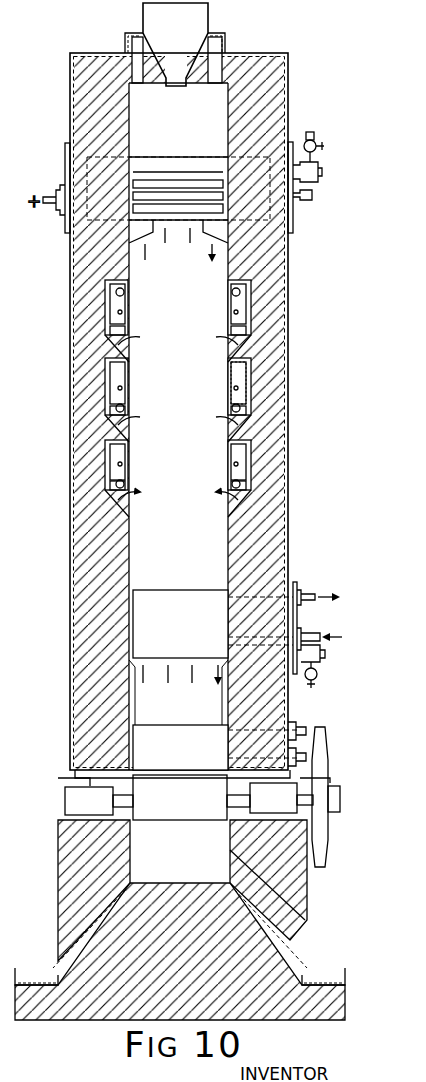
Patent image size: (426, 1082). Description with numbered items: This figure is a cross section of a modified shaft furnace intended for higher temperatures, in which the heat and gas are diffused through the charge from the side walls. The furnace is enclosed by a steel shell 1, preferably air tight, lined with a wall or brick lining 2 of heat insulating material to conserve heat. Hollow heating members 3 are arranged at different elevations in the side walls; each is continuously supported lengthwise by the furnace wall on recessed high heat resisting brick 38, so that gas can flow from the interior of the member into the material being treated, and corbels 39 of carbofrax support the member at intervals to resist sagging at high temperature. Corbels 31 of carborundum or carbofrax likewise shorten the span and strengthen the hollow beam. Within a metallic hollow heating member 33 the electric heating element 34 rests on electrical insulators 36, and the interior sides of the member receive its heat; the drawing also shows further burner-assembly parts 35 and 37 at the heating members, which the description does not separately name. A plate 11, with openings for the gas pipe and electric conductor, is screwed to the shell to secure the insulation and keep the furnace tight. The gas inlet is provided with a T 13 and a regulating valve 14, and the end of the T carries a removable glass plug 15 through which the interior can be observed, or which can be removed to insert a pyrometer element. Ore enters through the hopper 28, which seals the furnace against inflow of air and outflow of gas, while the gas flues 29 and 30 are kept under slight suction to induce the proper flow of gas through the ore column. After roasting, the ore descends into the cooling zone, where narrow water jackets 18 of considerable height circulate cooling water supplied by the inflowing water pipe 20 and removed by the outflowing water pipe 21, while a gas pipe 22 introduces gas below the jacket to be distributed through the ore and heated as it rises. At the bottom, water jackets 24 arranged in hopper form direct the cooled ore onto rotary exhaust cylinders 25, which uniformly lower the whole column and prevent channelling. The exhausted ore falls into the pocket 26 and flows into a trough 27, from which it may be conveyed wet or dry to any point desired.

The steel shell 1 is at (72, 548).
The wall or brick lining 2 is at (95, 570).
The hollow heating member 3 is at (150, 176).
The plate 11 is at (294, 220).
The T 13 is at (313, 188).
The regulating valve 14 is at (322, 143).
The removable glass plug 15 is at (323, 172).
The water jacket 18 is at (140, 627).
The inflowing water pipe 20 is at (285, 633).
The outflowing water pipe 21 is at (283, 589).
The gas pipe 22 is at (326, 666).
The bottom water jacket 24 is at (155, 750).
The rotary exhaust cylinder 25 is at (175, 800).
The pocket 26 is at (170, 848).
The trough 27 is at (180, 965).
The hopper 28 is at (209, 23).
The gas flue 29 is at (215, 73).
The gas flue 30 is at (226, 43).
The corbel 31 is at (140, 233).
The hollow heating member 33 is at (110, 304).
The electric heating element 34 is at (112, 318).
The burner nozzle 35 is at (112, 290).
The electrical insulator 36 is at (250, 318).
The burner chamber 37 is at (250, 413).
The recessed high heat resisting brick 38 is at (125, 348).
The corbel 39 is at (125, 507).